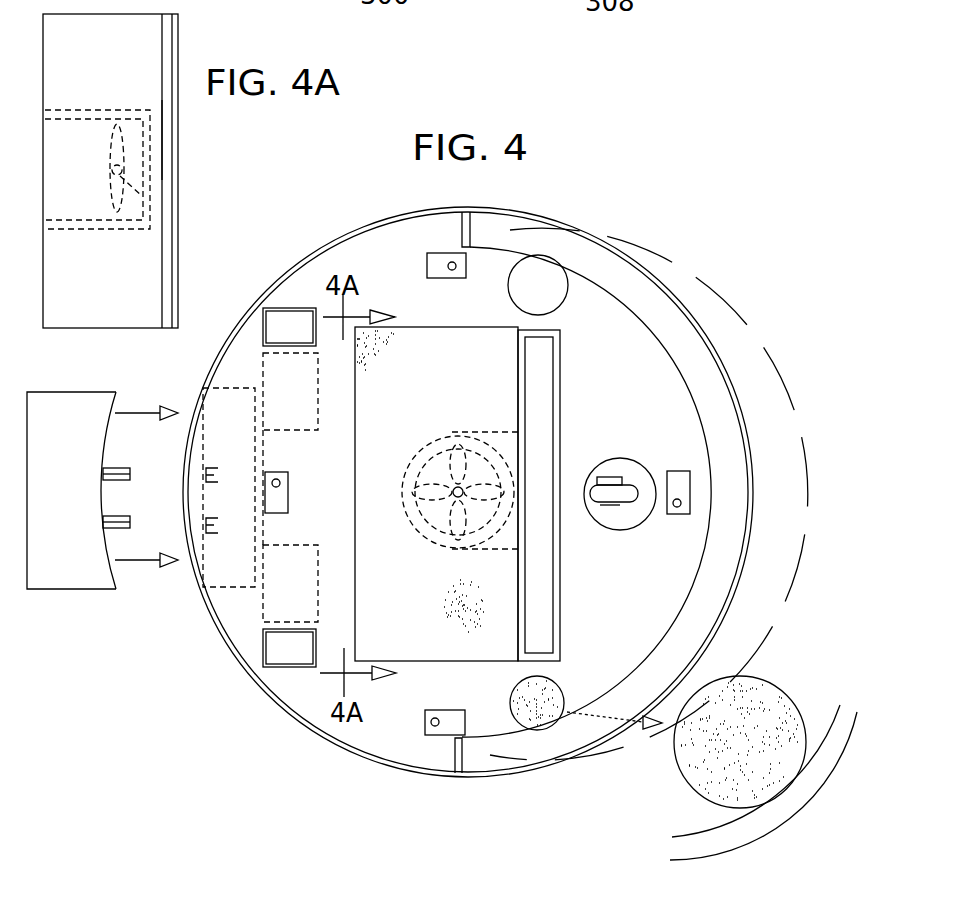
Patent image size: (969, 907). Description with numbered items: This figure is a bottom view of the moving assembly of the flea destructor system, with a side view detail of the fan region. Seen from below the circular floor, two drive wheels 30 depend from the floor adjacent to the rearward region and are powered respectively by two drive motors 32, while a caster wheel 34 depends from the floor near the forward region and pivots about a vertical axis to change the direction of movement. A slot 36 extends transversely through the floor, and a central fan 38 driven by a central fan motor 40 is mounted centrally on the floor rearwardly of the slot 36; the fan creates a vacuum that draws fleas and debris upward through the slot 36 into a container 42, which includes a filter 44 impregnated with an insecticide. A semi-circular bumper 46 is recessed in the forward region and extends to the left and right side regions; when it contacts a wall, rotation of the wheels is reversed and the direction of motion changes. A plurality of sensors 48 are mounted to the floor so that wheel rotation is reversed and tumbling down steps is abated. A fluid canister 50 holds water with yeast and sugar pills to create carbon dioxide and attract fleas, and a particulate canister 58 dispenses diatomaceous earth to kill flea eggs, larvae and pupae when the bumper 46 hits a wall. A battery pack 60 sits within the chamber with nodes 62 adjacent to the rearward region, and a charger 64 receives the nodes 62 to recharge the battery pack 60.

In FIG. 4, the drive wheels 30 is at (308, 342).
In FIG. 4, the drive motors 32 is at (308, 399).
In FIG. 4, the caster wheel 34 is at (623, 489).
In FIG. 4, the slot 36 is at (540, 607).
In FIG. 4A, the central fan 38 is at (166, 198).
In FIG. 4, the central fan 38 is at (467, 463).
In FIG. 4A, the central fan motor 40 is at (110, 171).
In FIG. 4, the central fan motor 40 is at (443, 468).
In FIG. 4A, the container 42 is at (127, 277).
In FIG. 4, the container 42 is at (427, 578).
In FIG. 4A, the filter 44 is at (173, 137).
In FIG. 4, the filter 44 is at (370, 345).
In FIG. 4, the semi-circular bumper 46 is at (668, 318).
In FIG. 4, the sensors 48 is at (437, 256).
In FIG. 4, the fluid canister 50 is at (553, 268).
In FIG. 4, the particulate canister 58 is at (560, 693).
In FIG. 4, the battery pack 60 is at (246, 447).
In FIG. 4, the nodes 62 is at (200, 478).
In FIG. 4, the charger 64 is at (83, 509).